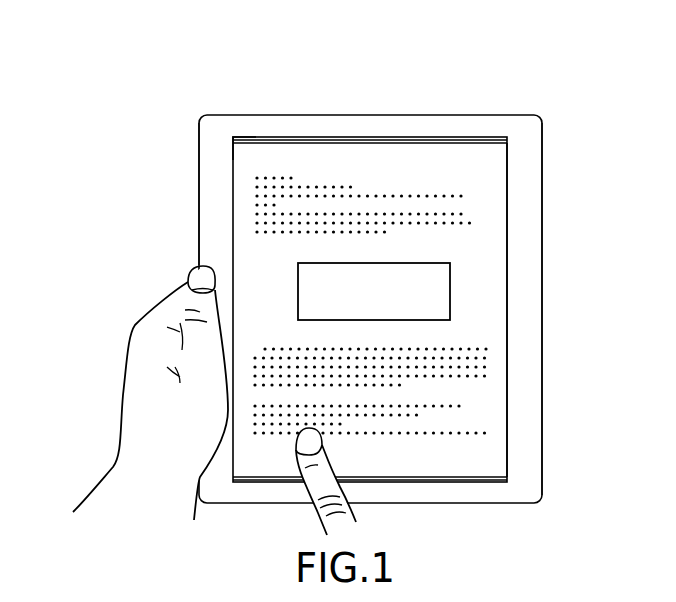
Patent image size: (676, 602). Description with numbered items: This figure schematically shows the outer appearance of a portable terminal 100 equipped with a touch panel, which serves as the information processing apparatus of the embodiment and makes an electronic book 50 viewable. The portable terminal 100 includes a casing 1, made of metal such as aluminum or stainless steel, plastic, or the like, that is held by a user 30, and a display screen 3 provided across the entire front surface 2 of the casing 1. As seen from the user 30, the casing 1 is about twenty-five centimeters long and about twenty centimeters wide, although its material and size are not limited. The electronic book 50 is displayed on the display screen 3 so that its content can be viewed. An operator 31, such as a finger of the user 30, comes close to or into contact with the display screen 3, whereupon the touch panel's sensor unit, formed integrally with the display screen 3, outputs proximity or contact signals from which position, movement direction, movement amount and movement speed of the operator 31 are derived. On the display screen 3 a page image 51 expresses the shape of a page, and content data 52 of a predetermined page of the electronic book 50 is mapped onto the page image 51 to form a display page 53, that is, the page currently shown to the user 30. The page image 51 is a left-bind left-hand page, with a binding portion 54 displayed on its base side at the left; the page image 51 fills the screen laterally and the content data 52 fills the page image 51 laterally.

The portable terminal 100 is at (374, 278).
The casing 1 is at (255, 122).
The front surface 2 is at (207, 165).
The display screen 3 is at (492, 170).
The electronic book 50 is at (393, 310).
The page image 51 is at (310, 138).
The content data 52 is at (428, 320).
The display page 53 is at (492, 332).
The binding portion 54 is at (233, 137).
The user 30 is at (108, 490).
The operator 31 is at (356, 518).